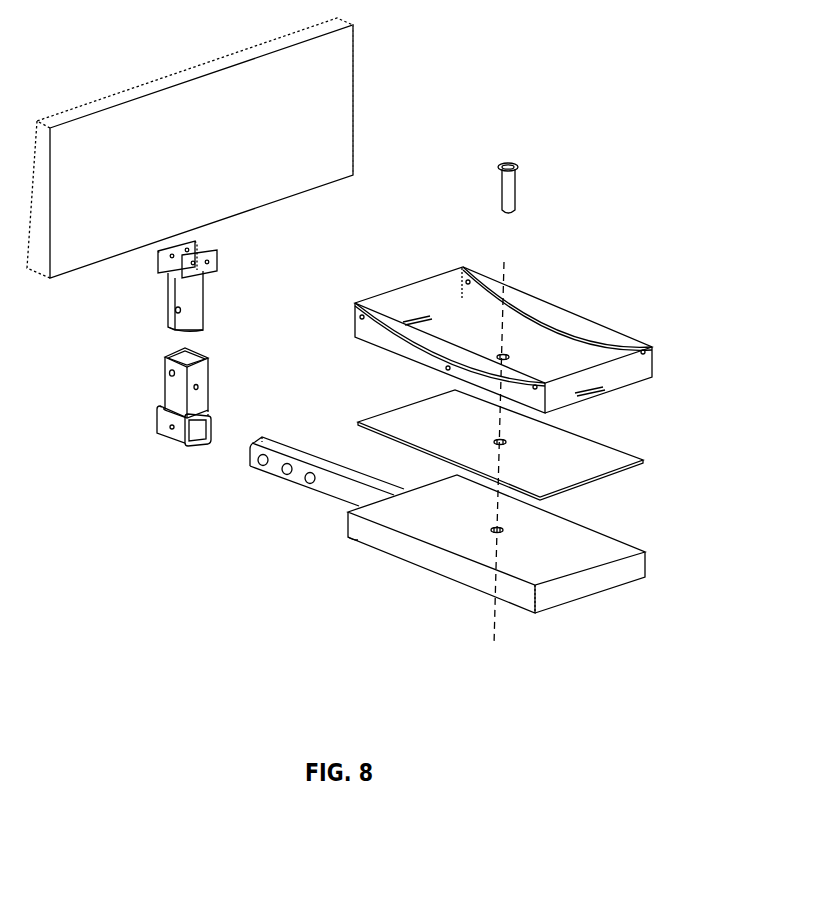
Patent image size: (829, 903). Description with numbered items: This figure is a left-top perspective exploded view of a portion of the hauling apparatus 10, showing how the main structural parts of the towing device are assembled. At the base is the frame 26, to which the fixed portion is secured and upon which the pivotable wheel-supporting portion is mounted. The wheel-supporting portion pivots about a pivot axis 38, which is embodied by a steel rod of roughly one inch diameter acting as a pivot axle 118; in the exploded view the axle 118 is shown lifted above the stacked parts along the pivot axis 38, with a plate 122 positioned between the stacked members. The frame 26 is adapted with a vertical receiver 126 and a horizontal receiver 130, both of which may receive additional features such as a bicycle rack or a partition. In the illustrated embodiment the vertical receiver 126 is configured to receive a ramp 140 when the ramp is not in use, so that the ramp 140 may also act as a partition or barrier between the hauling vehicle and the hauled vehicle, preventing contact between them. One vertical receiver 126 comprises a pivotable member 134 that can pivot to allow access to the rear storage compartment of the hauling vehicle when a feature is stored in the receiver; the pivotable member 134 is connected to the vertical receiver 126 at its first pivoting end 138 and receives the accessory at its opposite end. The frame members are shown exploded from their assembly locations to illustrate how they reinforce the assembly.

The hauling apparatus 10 is at (645, 200).
The frame 26 is at (330, 487).
The pivot axis 38 is at (496, 466).
The pivot axle 118 is at (512, 195).
The plate 122 is at (610, 462).
The vertical receiver 126 is at (172, 387).
The horizontal receiver 130 is at (183, 427).
The pivotable member 134 is at (193, 312).
The first pivoting end 138 is at (173, 312).
The ramp 140 is at (323, 142).